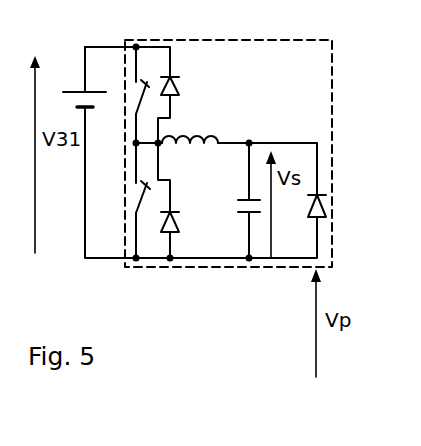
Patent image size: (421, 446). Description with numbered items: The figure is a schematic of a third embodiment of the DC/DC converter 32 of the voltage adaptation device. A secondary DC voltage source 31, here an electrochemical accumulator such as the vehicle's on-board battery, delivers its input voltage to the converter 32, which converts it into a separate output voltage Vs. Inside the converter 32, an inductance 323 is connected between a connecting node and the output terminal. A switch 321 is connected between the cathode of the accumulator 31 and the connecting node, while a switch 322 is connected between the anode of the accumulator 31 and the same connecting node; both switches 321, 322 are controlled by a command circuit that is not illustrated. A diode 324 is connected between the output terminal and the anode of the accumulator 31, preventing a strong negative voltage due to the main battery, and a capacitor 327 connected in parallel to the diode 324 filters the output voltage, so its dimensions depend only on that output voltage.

The secondary DC voltage source 31 is at (90, 108).
The DC/DC converter 32 is at (334, 156).
The switch 321 is at (138, 89).
The switch 322 is at (132, 201).
The inductance 323 is at (210, 134).
The diode 324 is at (327, 205).
The capacitor 327 is at (237, 206).